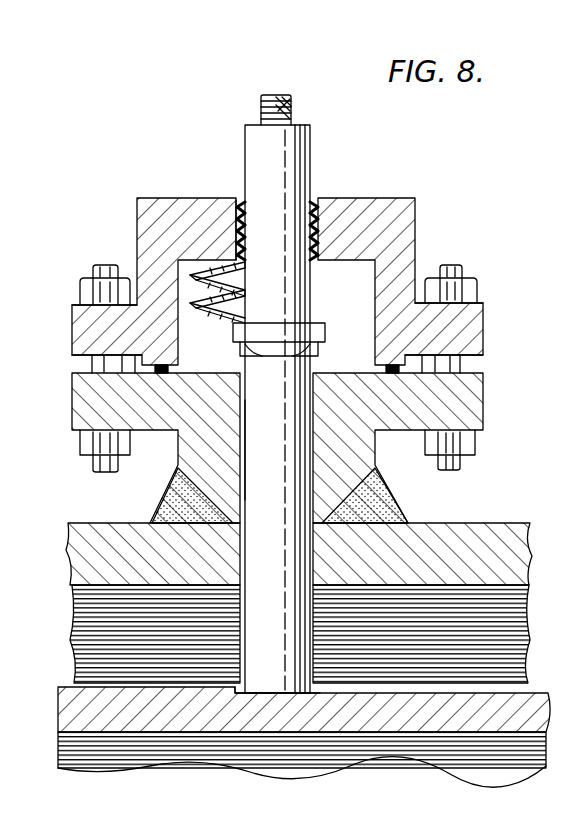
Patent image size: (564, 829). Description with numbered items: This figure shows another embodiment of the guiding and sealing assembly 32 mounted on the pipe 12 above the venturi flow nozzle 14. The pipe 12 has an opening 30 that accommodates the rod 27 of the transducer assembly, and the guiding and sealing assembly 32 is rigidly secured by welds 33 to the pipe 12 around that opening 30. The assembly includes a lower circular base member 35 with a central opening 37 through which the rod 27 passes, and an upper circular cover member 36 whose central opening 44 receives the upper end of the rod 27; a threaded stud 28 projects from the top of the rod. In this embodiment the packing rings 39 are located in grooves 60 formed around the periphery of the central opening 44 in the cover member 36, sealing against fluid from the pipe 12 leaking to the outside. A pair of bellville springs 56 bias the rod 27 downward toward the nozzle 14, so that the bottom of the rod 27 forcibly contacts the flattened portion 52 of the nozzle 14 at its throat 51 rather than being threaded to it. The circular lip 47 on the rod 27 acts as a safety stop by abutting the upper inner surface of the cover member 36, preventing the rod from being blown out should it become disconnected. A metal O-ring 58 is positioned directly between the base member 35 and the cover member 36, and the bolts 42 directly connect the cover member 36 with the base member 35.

The pipe 12 is at (478, 523).
The venturi flow nozzle 14 is at (408, 690).
The rod 27 is at (300, 352).
The threaded stud 28 is at (280, 105).
The pipe opening 30 is at (302, 554).
The guiding and sealing assembly 32 is at (424, 208).
The welds 33 is at (160, 508).
The base member 35 is at (468, 410).
The cover member 36 is at (483, 330).
The central opening 37 is at (303, 466).
The packing rings 39 is at (318, 216).
The bolts 42 is at (462, 272).
The central opening 44 is at (244, 205).
The lip 47 is at (240, 343).
The throat 51 is at (333, 735).
The flattened portion 52 is at (318, 687).
The bellville springs 56 is at (237, 319).
The metal O-ring 58 is at (418, 386).
The grooves 60 is at (238, 216).